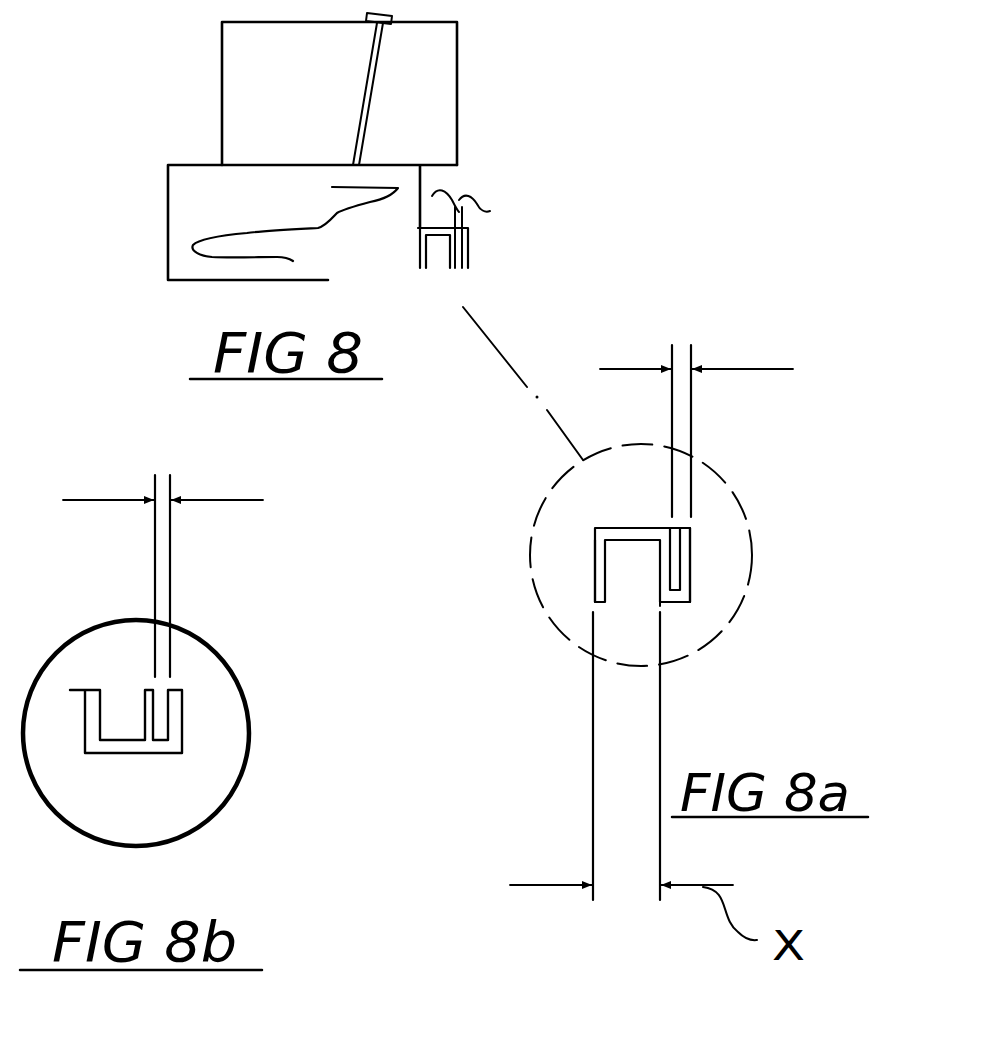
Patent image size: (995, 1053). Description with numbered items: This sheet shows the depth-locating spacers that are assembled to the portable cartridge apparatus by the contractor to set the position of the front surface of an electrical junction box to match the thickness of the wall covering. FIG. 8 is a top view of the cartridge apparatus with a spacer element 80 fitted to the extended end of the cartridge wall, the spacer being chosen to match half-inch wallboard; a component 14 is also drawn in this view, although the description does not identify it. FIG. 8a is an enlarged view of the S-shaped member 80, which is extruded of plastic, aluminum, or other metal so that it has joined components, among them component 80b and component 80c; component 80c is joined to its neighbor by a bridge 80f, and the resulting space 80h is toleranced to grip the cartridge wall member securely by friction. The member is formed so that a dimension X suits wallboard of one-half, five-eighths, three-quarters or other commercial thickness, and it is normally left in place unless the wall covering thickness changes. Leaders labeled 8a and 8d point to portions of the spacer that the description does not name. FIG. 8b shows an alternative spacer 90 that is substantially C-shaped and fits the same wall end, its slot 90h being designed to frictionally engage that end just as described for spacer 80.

In FIG. 8, the trimmer head housing 14 is at (210, 227).
In FIG. 8, the spacer element 80 is at (468, 250).
In FIG. 8A, the spacer element 80 is at (733, 548).
In FIG. 8A, the space 80h is at (756, 369).
In FIG. 8A, the joined component 80b is at (623, 528).
In FIG. 8A, the joined component 80c is at (690, 588).
In FIG. 8A, the bridge 80f is at (680, 605).
In FIG. 8A, the holder wall 8a is at (595, 560).
In FIG. 8A, the holder legs 8d is at (657, 570).
In FIG. 8B, the alternative spacer 90 is at (115, 760).
In FIG. 8B, the slot 90h is at (210, 500).